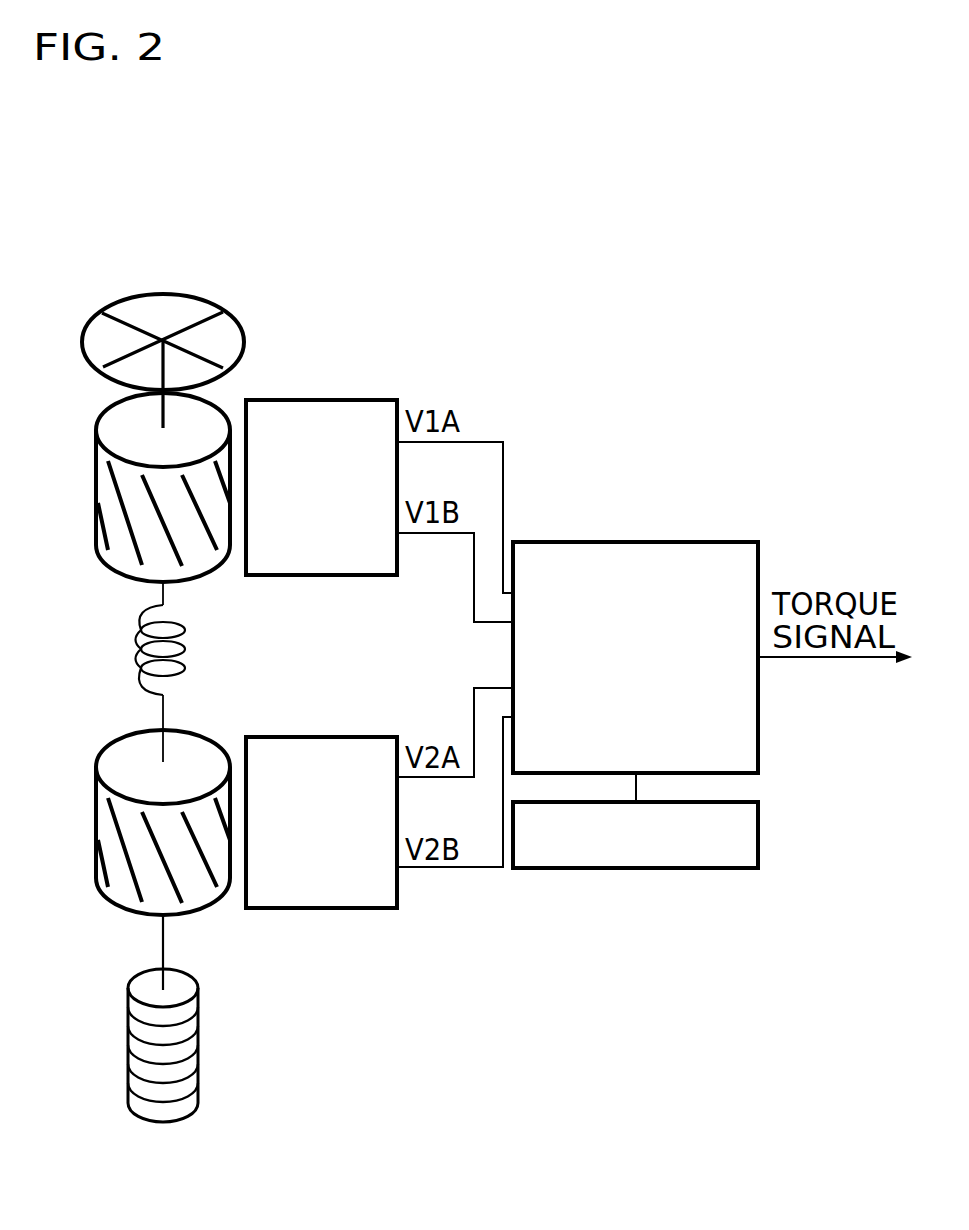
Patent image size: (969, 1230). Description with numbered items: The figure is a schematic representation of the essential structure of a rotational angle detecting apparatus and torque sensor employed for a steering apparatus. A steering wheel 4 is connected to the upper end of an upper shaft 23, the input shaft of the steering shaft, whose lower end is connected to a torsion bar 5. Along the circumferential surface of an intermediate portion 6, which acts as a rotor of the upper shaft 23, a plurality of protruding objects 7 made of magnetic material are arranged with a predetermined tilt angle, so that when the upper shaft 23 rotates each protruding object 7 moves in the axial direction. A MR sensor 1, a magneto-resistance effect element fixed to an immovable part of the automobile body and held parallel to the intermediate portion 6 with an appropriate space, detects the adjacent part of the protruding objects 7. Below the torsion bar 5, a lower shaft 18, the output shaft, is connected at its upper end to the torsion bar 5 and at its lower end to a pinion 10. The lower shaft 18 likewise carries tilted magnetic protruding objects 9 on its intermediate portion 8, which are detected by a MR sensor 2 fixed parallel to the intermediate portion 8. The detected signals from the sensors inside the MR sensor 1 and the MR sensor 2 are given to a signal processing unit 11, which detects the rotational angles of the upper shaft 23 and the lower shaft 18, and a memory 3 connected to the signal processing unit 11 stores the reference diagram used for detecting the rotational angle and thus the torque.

The MR sensor 1 is at (273, 400).
The MR sensor 2 is at (273, 737).
The memory 3 is at (760, 835).
The steering wheel 4 is at (123, 299).
The torsion bar 5 is at (133, 638).
The intermediate portion 6 is at (102, 412).
The protruding objects 7 is at (58, 521).
The intermediate portion 8 is at (100, 745).
The protruding objects 9 is at (62, 832).
The pinion 10 is at (128, 1048).
The signal processing unit 11 is at (578, 542).
The lower shaft 18 is at (160, 938).
The upper shaft 23 is at (118, 363).